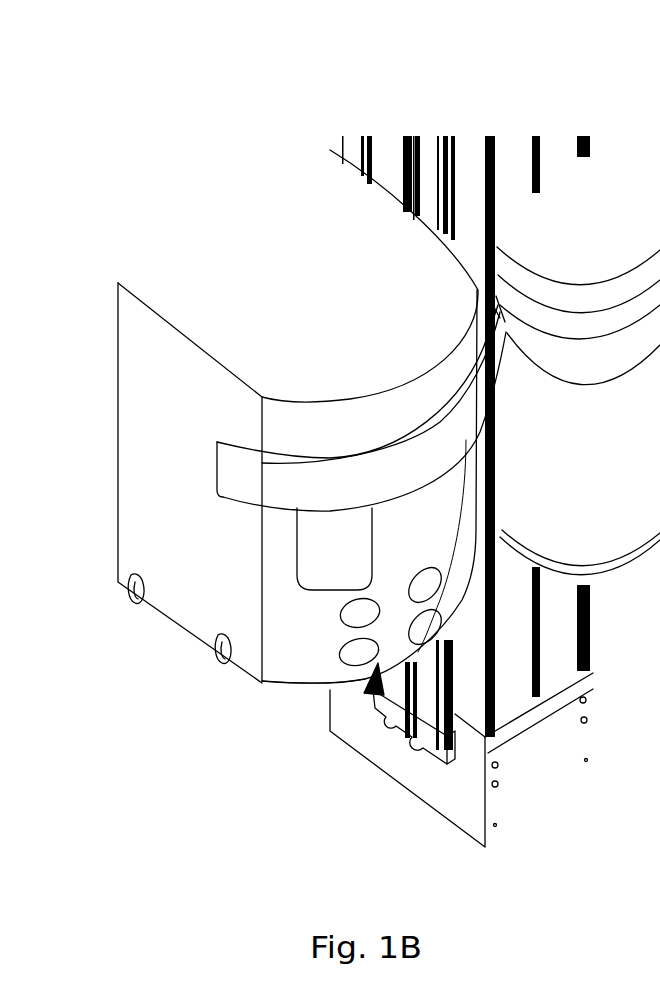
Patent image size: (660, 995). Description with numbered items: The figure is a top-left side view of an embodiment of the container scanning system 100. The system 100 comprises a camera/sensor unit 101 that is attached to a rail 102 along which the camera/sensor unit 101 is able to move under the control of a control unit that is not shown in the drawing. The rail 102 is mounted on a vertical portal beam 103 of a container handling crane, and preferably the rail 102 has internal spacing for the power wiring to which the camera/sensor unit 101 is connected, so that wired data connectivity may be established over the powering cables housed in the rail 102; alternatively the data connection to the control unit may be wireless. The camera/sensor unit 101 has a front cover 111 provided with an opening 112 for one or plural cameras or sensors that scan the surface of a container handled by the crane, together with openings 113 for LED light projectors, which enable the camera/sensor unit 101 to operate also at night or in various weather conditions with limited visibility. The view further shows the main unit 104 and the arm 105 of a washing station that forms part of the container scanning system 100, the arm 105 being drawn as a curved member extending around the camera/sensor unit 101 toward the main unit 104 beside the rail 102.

The container scanning system 100 is at (146, 129).
The camera/sensor unit 101 is at (175, 265).
The rail 102 is at (413, 136).
The vertical portal beam 103 is at (455, 805).
The main unit 104 is at (618, 203).
The arm 105 is at (276, 479).
The front cover 111 is at (290, 677).
The opening 112 is at (305, 541).
The openings 113 is at (350, 613).